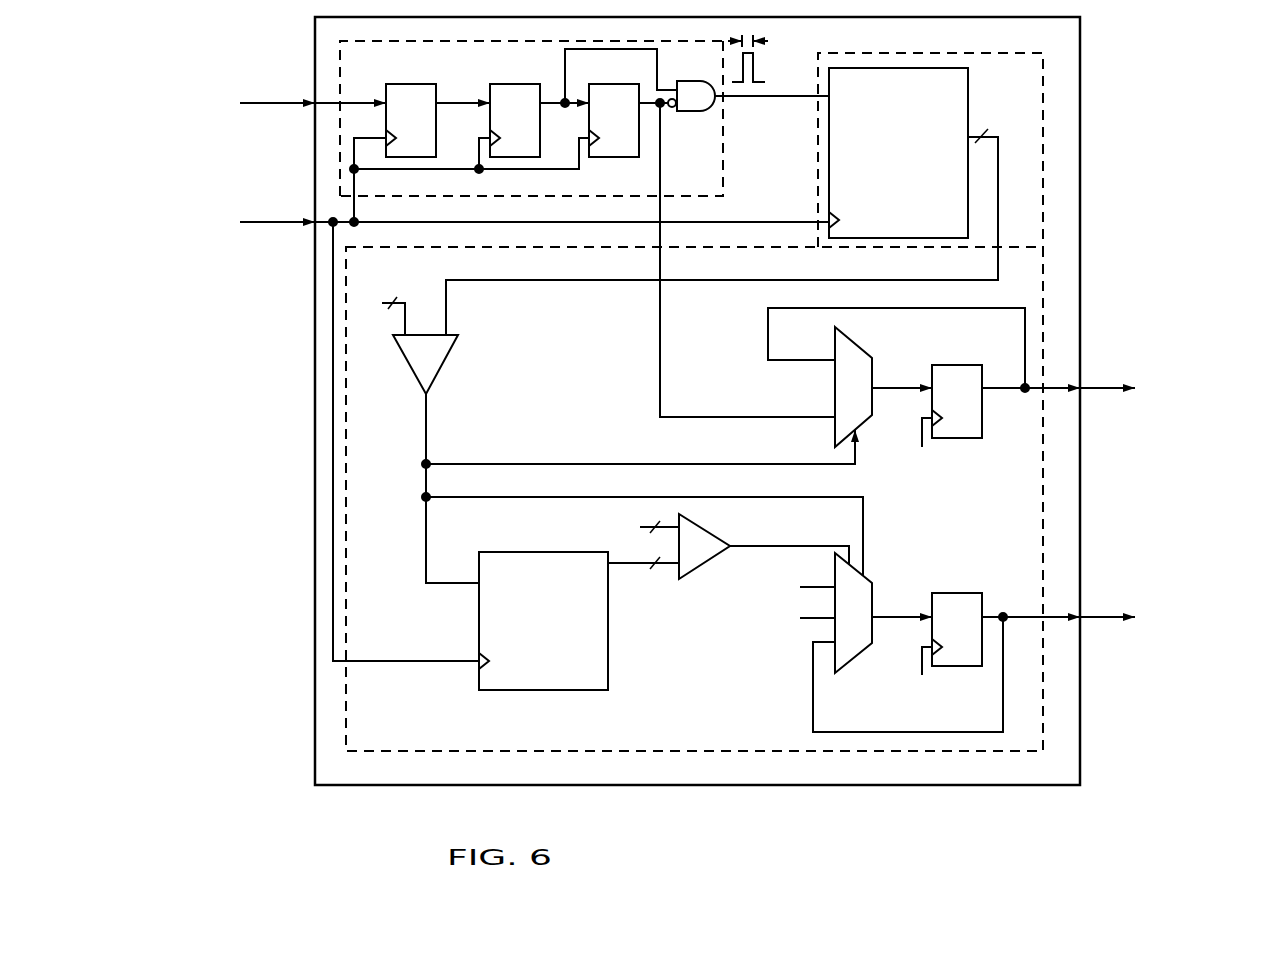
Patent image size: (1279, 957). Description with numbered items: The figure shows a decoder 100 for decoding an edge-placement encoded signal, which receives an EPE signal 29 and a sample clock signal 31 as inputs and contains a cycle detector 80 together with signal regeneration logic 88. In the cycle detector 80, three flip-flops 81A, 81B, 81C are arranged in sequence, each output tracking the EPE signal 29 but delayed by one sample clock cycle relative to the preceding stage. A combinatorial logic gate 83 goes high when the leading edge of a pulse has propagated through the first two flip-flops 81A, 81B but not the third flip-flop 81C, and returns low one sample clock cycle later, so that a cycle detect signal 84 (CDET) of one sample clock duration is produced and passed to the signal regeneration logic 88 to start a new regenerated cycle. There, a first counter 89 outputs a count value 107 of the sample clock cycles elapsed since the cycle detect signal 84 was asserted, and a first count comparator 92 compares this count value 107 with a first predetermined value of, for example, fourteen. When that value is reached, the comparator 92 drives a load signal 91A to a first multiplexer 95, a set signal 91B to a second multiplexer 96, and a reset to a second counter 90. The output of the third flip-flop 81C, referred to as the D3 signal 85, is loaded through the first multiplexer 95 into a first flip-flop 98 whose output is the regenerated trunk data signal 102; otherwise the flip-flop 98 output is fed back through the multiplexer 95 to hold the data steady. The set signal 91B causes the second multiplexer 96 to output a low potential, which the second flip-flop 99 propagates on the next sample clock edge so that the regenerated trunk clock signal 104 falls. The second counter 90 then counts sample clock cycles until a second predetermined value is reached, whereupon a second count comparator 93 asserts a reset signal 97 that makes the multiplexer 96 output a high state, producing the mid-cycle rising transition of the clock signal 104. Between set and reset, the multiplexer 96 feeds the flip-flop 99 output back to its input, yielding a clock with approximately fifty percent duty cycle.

The EPE signal 29 is at (259, 95).
The sample clock signal 31 is at (492, 428).
The cycle detector 80 is at (373, 78).
The first flip-flop 81A is at (396, 84).
The second flip-flop 81B is at (500, 84).
The third flip-flop 81C is at (599, 84).
The combinatorial logic gate 83 is at (703, 105).
The cycle detect signal 84 is at (745, 98).
The first counter 89 is at (914, 180).
The count value 107 is at (858, 280).
The signal regeneration logic 88 is at (682, 740).
The first count comparator 92 is at (446, 368).
The D3 signal 85 is at (712, 418).
The load signal 91A is at (712, 463).
The set signal 91B is at (790, 497).
The first multiplexer 95 is at (860, 345).
The first flip-flop 98 is at (942, 365).
The regenerated trunk data signal 102 is at (1116, 408).
The second counter 90 is at (551, 673).
The second count comparator 93 is at (710, 556).
The reset signal 97 is at (795, 545).
The second multiplexer 96 is at (872, 590).
The second flip-flop 99 is at (942, 593).
The regenerated trunk clock signal 104 is at (1130, 610).
The decoder 100 is at (970, 785).